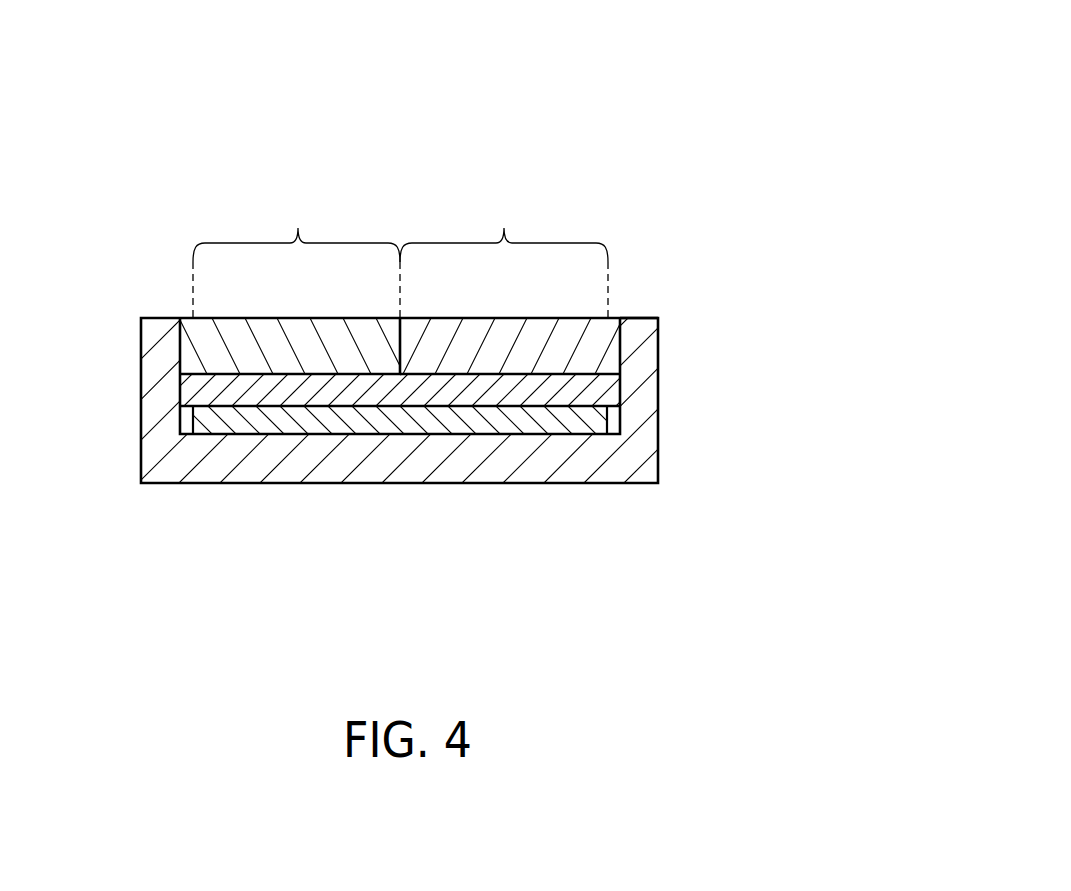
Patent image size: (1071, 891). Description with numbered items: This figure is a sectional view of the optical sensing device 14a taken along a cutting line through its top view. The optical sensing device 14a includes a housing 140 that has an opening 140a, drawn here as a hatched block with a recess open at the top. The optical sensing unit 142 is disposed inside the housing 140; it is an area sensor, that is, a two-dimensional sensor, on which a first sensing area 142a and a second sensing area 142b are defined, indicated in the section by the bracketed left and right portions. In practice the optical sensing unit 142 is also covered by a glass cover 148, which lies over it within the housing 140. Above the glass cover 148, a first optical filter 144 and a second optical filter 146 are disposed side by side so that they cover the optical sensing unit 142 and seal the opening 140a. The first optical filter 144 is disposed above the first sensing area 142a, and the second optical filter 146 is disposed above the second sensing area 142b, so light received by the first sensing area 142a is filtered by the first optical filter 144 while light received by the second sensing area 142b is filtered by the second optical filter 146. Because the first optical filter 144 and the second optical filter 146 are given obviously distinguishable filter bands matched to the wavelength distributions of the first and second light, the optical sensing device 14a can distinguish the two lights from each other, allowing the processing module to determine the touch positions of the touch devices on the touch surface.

The optical sensing device 14a is at (395, 285).
The housing 140 is at (607, 470).
The opening 140a is at (637, 345).
The optical sensing unit 142 is at (508, 413).
The first sensing area 142a is at (296, 257).
The second sensing area 142b is at (504, 257).
The first optical filter 144 is at (202, 358).
The second optical filter 146 is at (600, 359).
The glass cover 148 is at (288, 386).